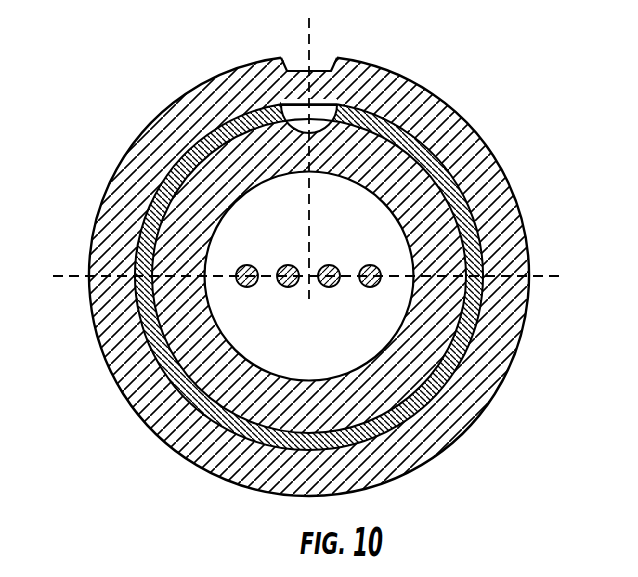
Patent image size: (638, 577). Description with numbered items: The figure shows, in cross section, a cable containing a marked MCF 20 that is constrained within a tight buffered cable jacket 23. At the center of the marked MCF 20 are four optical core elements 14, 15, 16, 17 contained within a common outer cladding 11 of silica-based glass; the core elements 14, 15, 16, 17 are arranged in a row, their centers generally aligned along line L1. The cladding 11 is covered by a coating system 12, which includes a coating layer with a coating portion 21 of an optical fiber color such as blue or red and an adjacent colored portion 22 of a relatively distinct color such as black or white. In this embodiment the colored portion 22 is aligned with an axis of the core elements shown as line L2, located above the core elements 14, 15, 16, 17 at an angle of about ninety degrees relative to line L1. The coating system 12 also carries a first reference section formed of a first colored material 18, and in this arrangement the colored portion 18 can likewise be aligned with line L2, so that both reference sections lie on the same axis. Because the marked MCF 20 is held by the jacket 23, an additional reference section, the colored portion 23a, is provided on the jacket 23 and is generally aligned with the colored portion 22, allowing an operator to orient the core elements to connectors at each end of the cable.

The common outer cladding 11 is at (340, 194).
The coating system 12 is at (421, 187).
The core element 14 is at (238, 294).
The core element 15 is at (282, 294).
The core element 16 is at (323, 294).
The core element 17 is at (365, 294).
The first colored material 18 is at (387, 97).
The marked MCF 20 is at (196, 129).
The coating portion 21 is at (478, 213).
The colored portion 22 is at (286, 89).
The outer tube 23 is at (524, 222).
The colored portion 23a is at (344, 53).
The line L1 is at (72, 276).
The line L2 is at (310, 56).